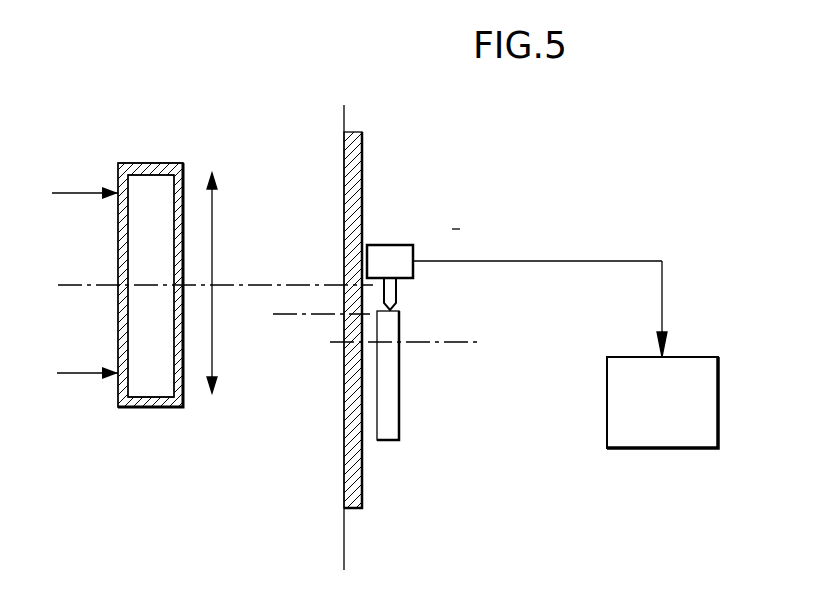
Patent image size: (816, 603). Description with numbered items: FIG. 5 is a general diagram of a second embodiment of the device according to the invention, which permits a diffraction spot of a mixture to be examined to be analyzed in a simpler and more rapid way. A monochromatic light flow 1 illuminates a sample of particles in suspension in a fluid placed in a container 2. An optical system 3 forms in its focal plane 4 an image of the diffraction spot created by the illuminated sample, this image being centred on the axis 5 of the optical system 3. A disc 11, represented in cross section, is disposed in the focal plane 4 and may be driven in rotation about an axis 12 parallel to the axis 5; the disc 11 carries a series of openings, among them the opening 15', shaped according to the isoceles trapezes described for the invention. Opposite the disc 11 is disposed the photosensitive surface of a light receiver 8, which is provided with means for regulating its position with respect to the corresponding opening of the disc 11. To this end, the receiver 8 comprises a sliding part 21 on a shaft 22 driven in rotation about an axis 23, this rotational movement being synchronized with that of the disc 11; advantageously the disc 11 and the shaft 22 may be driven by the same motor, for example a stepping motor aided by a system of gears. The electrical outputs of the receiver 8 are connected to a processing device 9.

The monochromatic light flow 1 is at (73, 372).
The container 2 is at (150, 382).
The optical system 3 is at (207, 360).
The focal plane 4 is at (342, 530).
The axis 5 is at (285, 286).
The light receiver 8 is at (390, 258).
The processing device 9 is at (687, 428).
The disc 11 is at (358, 477).
The axis 12 is at (303, 315).
The opening 15' is at (333, 233).
The sliding part 21 is at (390, 293).
The shaft 22 is at (387, 413).
The axis 23 is at (453, 342).